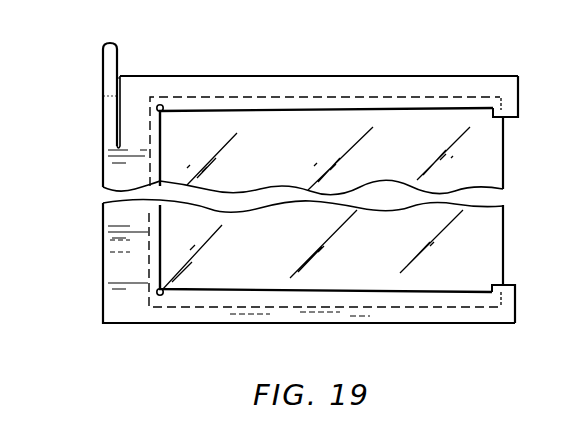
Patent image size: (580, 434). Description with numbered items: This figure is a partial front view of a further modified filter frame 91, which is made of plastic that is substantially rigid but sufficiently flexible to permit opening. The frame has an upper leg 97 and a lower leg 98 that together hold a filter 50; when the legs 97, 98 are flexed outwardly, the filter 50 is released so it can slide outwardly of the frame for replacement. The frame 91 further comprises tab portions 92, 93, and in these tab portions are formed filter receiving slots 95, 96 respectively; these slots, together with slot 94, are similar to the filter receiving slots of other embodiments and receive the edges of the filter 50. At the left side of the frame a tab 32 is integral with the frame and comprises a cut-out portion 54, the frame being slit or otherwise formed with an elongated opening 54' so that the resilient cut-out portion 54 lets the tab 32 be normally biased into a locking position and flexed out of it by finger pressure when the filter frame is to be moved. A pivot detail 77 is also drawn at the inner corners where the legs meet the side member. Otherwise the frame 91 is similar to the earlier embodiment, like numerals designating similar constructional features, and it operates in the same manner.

The tab 32 is at (118, 52).
The elongated opening 54' is at (78, 86).
The cut-out portion 54 is at (101, 117).
The pivot 77 is at (163, 110).
The slot 94 is at (153, 160).
The upper leg 97 is at (303, 56).
The tab portion 92 is at (518, 108).
The filter receiving slot 95 is at (499, 109).
The filter 50 is at (472, 177).
The filter frame 91 is at (118, 247).
The filter receiving slot 96 is at (493, 288).
The tab portion 93 is at (516, 303).
The lower leg 98 is at (328, 325).